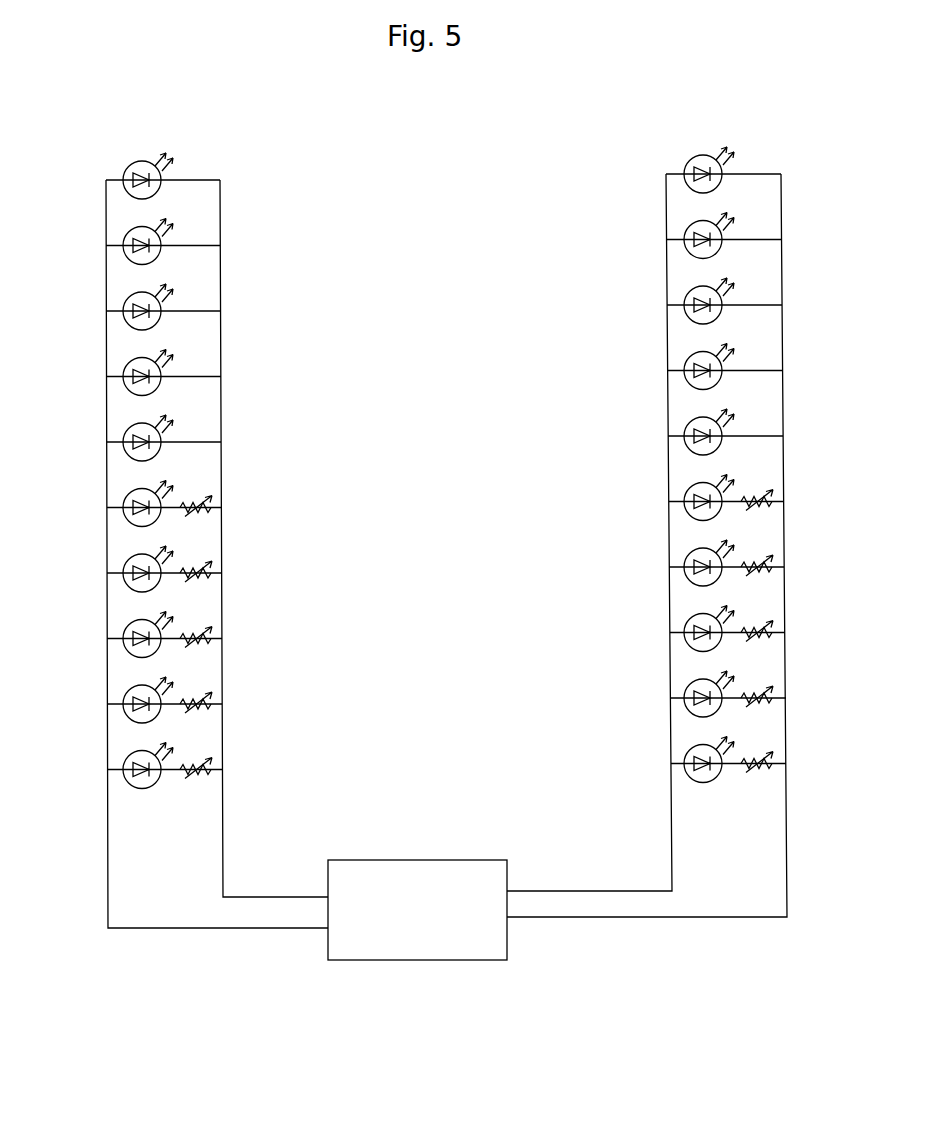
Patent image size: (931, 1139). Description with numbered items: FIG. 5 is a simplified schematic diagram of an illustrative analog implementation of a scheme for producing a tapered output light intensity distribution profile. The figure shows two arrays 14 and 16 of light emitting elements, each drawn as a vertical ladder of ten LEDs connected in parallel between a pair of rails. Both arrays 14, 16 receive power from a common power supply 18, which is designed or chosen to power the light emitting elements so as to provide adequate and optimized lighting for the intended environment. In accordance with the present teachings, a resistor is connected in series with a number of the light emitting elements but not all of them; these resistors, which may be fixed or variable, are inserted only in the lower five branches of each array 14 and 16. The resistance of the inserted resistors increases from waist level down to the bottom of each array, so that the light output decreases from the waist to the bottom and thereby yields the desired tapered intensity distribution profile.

The array 14 is at (72, 360).
The array 16 is at (797, 352).
The power supply 18 is at (420, 960).